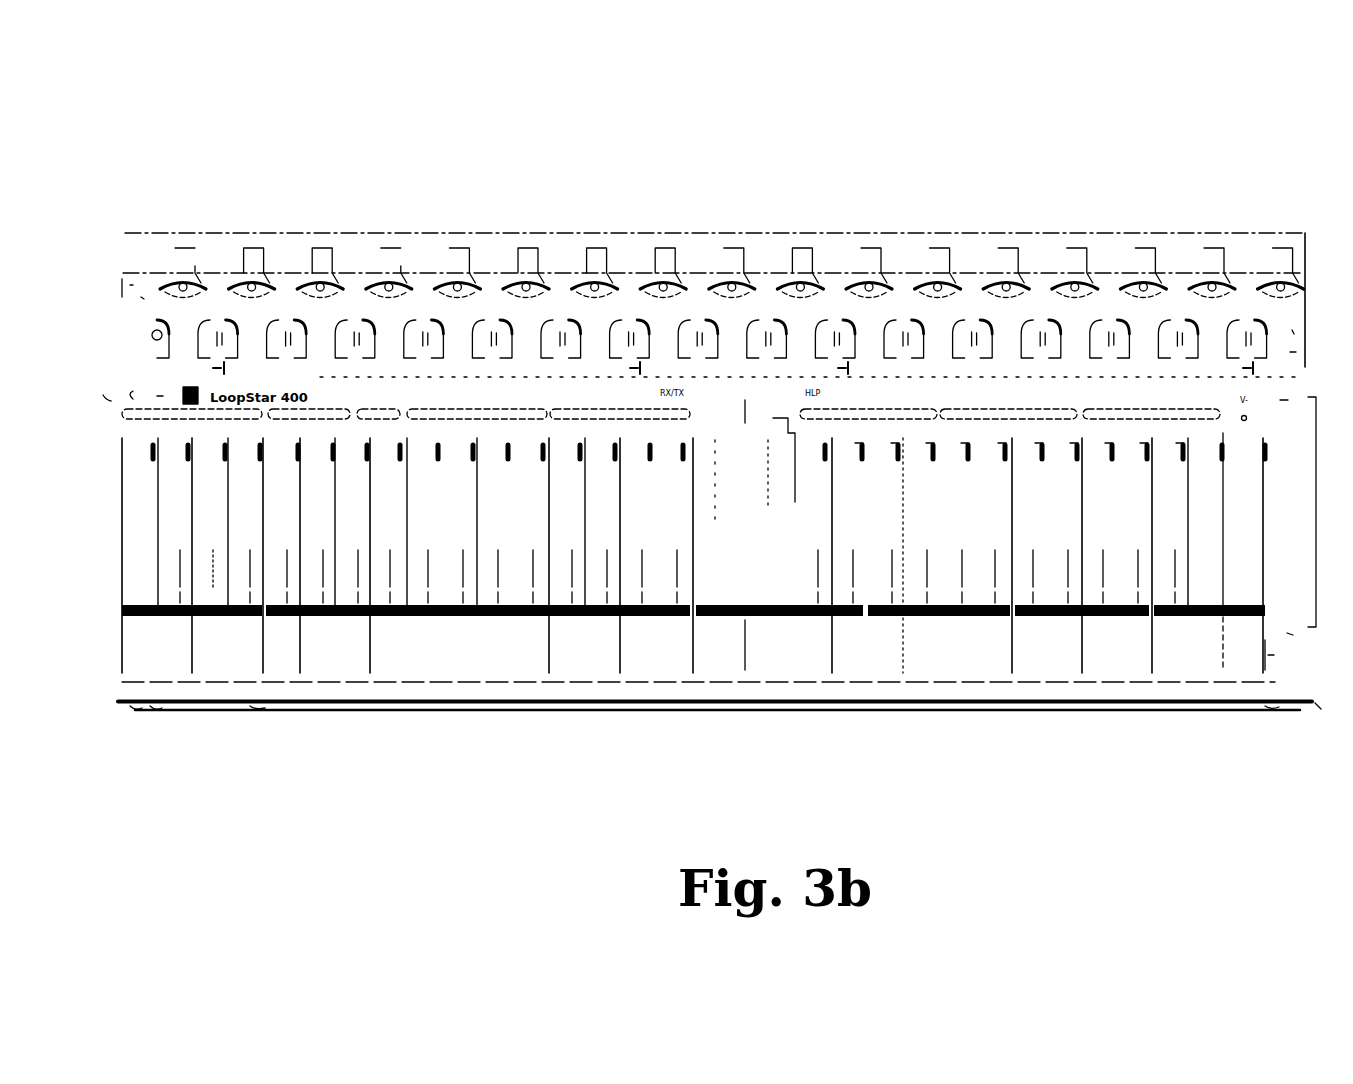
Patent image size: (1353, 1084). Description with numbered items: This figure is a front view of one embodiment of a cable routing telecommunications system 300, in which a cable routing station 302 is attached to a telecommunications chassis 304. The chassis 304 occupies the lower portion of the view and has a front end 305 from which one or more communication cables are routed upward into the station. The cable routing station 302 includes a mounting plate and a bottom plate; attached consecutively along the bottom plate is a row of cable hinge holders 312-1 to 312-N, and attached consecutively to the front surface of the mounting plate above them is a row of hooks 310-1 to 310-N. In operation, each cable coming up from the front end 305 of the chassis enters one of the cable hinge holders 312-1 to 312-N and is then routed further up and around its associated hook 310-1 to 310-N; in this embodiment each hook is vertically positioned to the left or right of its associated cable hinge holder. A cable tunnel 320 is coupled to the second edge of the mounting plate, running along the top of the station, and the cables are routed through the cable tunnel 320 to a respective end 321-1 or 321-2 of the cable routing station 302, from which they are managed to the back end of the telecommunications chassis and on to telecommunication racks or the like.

The cable routing telecommunications system 300 is at (1027, 205).
The cable routing station 302 is at (258, 234).
The telecommunications chassis 304 is at (1147, 650).
The front end 305 is at (713, 633).
The hook 310-1 is at (185, 272).
The hook 310-N is at (1272, 265).
The cable hinge holder 312-1 is at (224, 338).
The cable hinge holder 312-N is at (1257, 338).
The cable tunnel 320 is at (421, 254).
The end of cable routing station 321-1 is at (121, 231).
The end of cable routing station 321-2 is at (1302, 226).